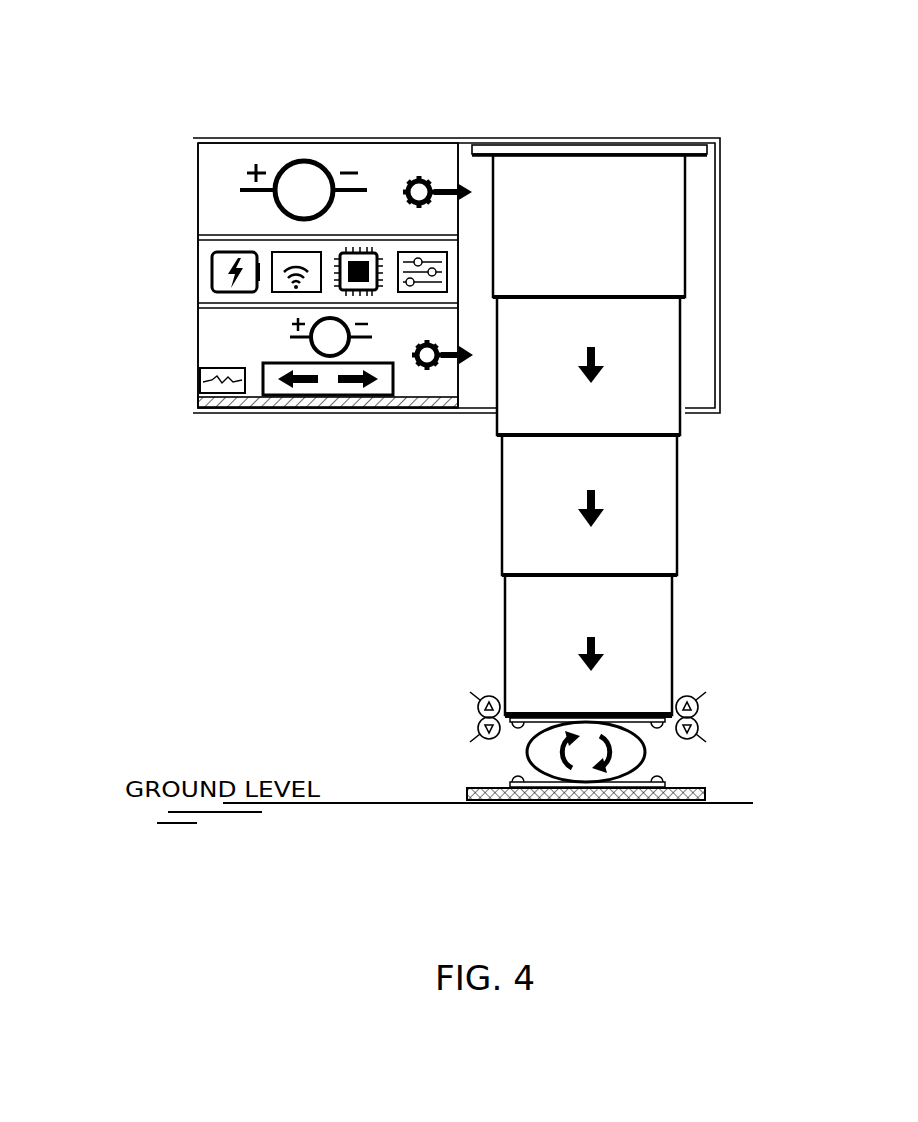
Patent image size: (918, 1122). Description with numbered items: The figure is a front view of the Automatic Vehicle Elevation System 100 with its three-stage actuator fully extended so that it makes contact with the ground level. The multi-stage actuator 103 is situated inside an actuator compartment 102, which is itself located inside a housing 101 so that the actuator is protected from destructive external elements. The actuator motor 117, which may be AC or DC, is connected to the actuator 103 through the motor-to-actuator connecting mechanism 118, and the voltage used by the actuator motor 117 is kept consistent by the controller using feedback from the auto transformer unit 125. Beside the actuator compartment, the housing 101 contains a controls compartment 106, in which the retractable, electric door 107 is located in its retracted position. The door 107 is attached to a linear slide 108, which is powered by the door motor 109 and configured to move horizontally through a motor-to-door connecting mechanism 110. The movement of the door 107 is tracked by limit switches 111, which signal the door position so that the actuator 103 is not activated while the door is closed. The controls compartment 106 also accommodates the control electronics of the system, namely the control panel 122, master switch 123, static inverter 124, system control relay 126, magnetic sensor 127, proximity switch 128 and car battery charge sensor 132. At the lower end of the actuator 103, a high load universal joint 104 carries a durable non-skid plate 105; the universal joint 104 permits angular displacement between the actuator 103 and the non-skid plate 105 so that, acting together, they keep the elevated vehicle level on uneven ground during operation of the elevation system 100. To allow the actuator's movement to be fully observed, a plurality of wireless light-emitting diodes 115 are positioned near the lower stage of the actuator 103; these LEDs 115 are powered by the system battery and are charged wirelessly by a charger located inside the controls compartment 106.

The Automatic Vehicle Elevation System 100 is at (168, 190).
The housing 101 is at (720, 138).
The actuator compartment 102 is at (707, 292).
The multi-stage actuator 103 is at (676, 218).
The high load universal joint 104 is at (537, 765).
The non-skid plate 105 is at (705, 790).
The controls compartment 106 is at (208, 157).
The retractable, electric door 107 is at (372, 397).
The linear slide 108 is at (282, 385).
The door motor 109 is at (306, 337).
The motor-to-door connecting mechanism 110 is at (430, 375).
The limit switch or micro switch 111 is at (218, 385).
The wireless light-emitting diode 115 is at (478, 698).
The actuator motor 117 is at (298, 157).
The motor-to-actuator connecting mechanism 118 is at (413, 177).
The control panel 122 is at (212, 280).
The master switch 123 is at (203, 298).
The static inverter 124 is at (234, 313).
The auto transformer unit 125 is at (266, 332).
The system control relay 126 is at (106, 431).
The magnetic sensor 127 is at (106, 466).
The proximity switch 128 is at (106, 500).
The car battery charge sensor 132 is at (106, 534).